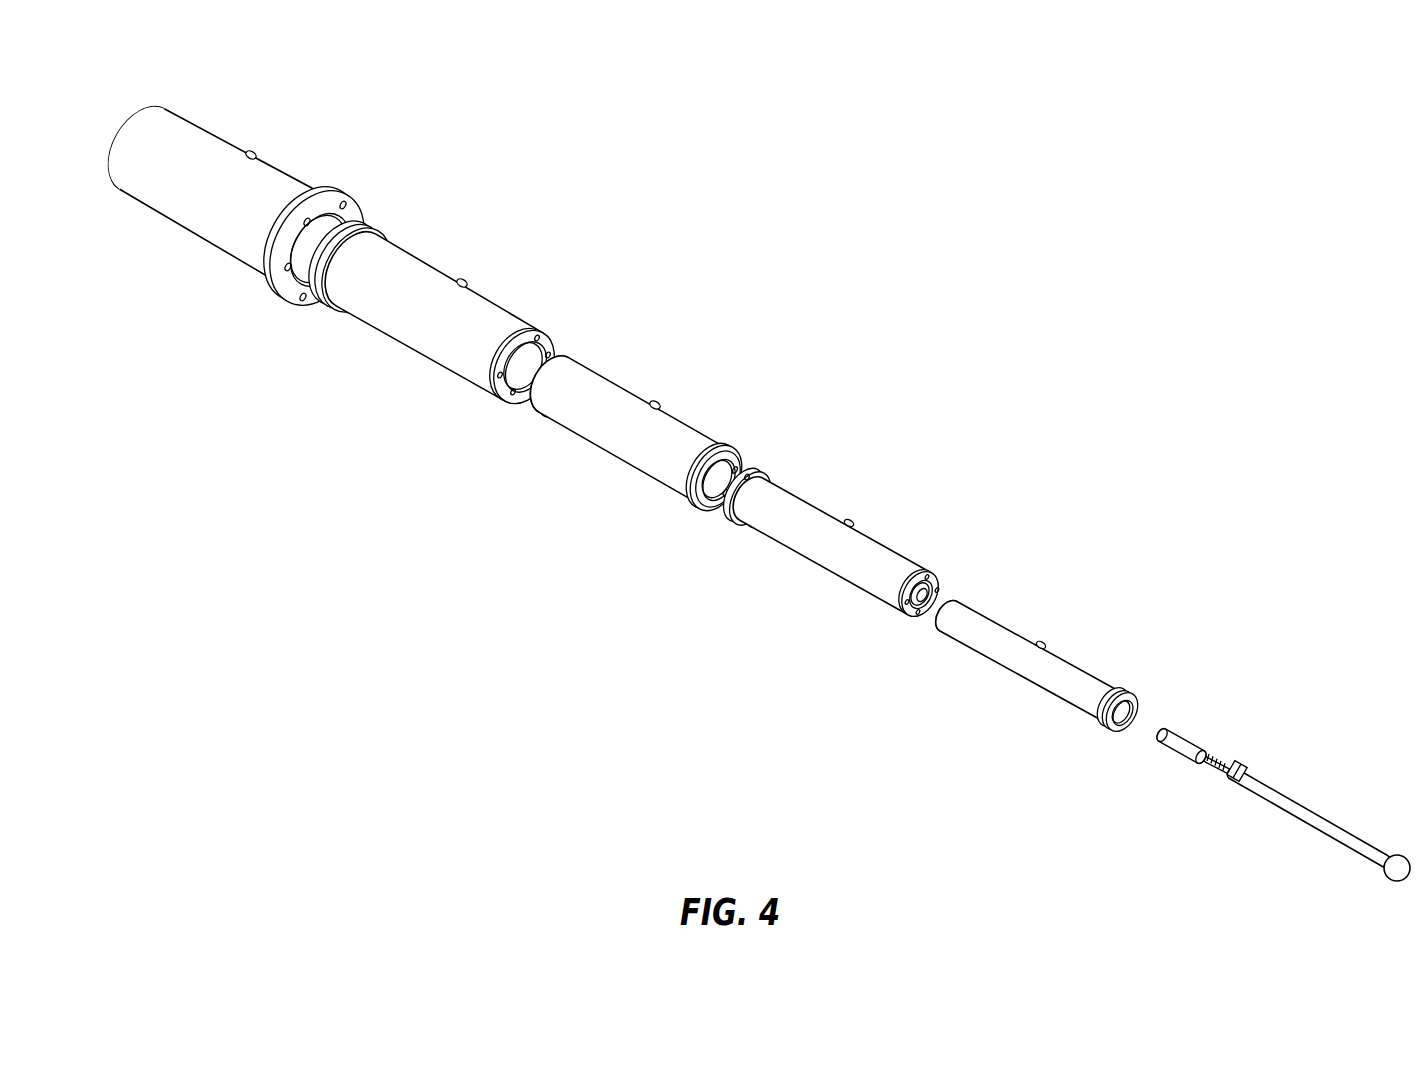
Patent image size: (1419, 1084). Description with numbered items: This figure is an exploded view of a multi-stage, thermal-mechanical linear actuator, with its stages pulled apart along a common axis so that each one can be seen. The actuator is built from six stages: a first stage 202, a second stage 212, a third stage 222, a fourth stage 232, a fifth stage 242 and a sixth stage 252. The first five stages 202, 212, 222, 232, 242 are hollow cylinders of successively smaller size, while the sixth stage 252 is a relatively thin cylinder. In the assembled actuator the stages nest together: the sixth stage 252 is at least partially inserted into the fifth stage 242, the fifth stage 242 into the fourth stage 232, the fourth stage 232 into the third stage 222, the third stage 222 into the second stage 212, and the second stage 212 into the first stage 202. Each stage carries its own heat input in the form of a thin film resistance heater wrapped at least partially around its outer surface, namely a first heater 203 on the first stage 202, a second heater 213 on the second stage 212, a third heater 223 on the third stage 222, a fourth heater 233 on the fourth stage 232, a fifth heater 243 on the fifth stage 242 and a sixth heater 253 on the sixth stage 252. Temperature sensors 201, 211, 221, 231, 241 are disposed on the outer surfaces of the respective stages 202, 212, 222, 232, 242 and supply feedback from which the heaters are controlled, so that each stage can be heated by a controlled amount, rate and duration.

The temperature sensor 201 is at (252, 158).
The first stage 202 is at (212, 218).
The first heater 203 is at (153, 183).
The temperature sensor 211 is at (460, 282).
The second stage 212 is at (433, 337).
The second heater 213 is at (380, 320).
The temperature sensor 221 is at (657, 401).
The third stage 222 is at (633, 433).
The third heater 223 is at (575, 422).
The temperature sensor 231 is at (847, 520).
The fourth stage 232 is at (830, 555).
The fourth heater 233 is at (777, 523).
The temperature sensor 241 is at (1038, 642).
The fifth stage 242 is at (1030, 662).
The fifth heater 243 is at (978, 632).
The sixth stage 252 is at (1318, 825).
The sixth heater 253 is at (1252, 797).